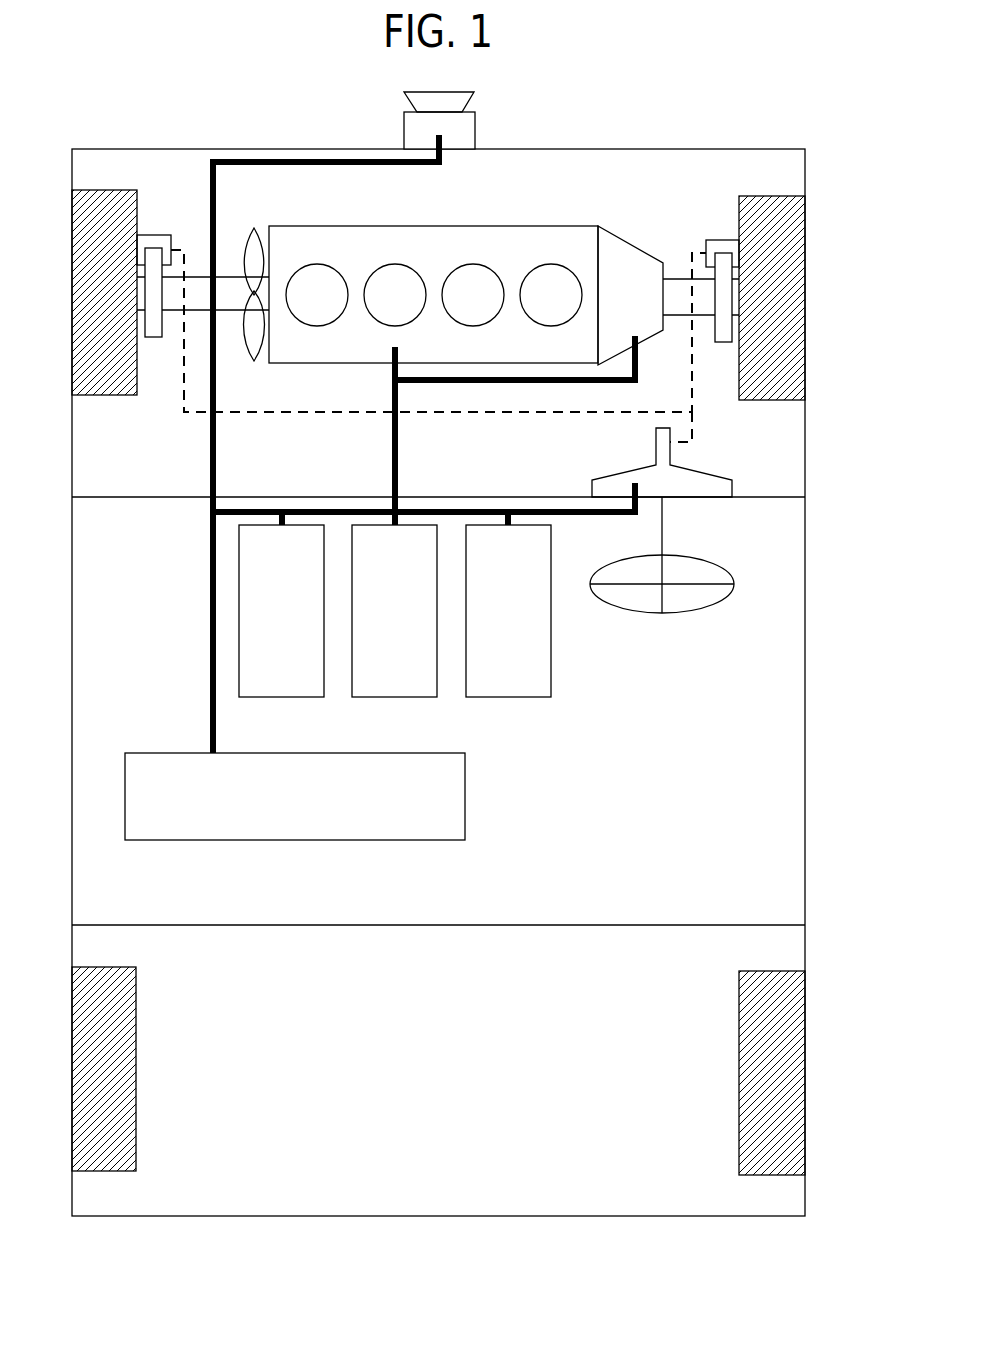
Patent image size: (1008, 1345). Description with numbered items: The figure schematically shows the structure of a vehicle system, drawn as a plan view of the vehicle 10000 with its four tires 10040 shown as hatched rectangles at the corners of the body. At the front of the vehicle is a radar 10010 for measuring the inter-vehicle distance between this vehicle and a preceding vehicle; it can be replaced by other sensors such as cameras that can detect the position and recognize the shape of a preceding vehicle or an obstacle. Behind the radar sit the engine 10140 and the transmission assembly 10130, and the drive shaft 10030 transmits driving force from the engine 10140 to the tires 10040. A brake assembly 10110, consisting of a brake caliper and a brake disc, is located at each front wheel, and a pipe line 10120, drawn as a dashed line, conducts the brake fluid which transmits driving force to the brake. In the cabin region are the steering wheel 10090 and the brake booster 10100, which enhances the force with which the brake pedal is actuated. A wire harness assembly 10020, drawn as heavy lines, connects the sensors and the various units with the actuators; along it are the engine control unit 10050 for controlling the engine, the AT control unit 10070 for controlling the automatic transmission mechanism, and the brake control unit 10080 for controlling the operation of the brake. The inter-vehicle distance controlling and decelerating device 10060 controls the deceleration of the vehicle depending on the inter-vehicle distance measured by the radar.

The vehicle 10000 is at (805, 606).
The radar 10010 is at (475, 128).
The wire harness assembly 10020 is at (218, 200).
The drive shaft 10030 is at (198, 277).
The tires 10040 is at (108, 395).
The engine control unit 10050 is at (282, 697).
The inter-vehicle distance controlling and decelerating device 10060 is at (465, 797).
The AT control unit 10070 is at (395, 697).
The brake control unit 10080 is at (508, 697).
The steering wheel 10090 is at (689, 614).
The brake booster 10100 is at (611, 474).
The brake assembly 10110 is at (722, 238).
The pipe line 10120 is at (694, 403).
The transmission assembly 10130 is at (639, 242).
The engine 10140 is at (438, 226).